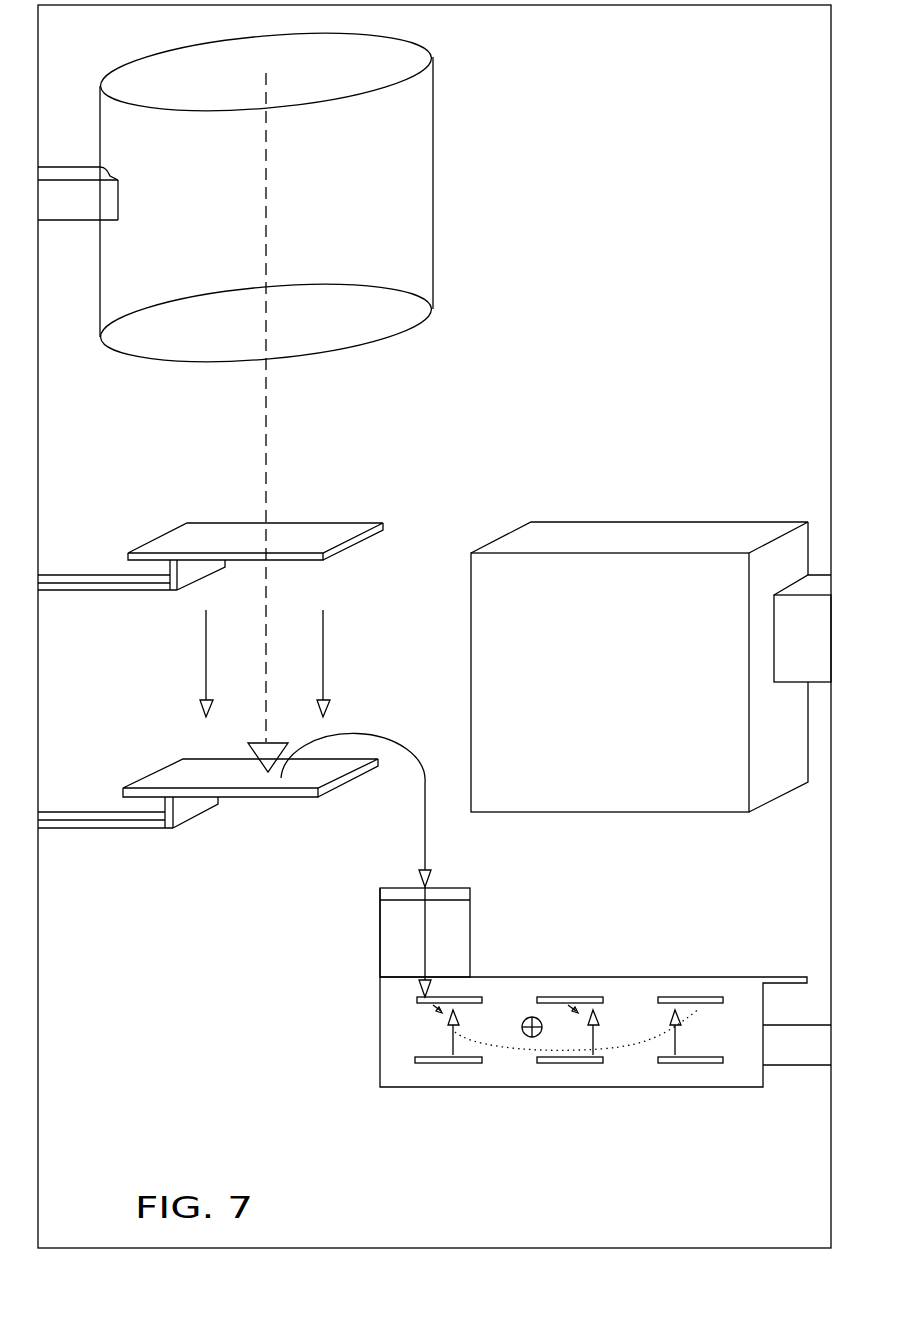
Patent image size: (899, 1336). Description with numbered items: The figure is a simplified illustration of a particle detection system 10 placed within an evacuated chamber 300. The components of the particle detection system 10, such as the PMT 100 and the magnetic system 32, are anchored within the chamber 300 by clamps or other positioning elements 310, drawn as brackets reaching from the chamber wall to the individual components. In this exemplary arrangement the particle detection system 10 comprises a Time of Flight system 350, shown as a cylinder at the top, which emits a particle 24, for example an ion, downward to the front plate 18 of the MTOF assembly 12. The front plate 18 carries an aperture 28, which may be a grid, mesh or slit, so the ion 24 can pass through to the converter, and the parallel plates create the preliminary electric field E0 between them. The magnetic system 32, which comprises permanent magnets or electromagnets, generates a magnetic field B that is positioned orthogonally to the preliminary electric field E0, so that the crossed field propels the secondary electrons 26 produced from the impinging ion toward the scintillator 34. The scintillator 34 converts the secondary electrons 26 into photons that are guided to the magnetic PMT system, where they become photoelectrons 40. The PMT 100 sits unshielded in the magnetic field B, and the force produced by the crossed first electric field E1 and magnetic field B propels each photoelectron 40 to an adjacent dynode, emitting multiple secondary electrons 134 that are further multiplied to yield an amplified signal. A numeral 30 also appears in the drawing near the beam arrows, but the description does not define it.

The chamber 300 is at (830, 6).
The Time of Flight (TOF) system 350 is at (393, 194).
The positioning elements 310 is at (60, 200).
The MTOF assembly 12 is at (225, 478).
The front plate 18 is at (227, 540).
The ions 24 is at (267, 460).
The electron beam 30 is at (323, 627).
The preliminary electric field E0 is at (345, 680).
The secondary electrons 26 is at (422, 786).
The scintillator 34 is at (380, 887).
The aperture 28 is at (510, 1029).
The PMT 100 is at (510, 1029).
The secondary electrons 134 is at (640, 1050).
The photoelectrons 40 is at (500, 1048).
The first electric field E1 is at (445, 1022).
The magnetic field B is at (522, 1030).
The particle detection system 10 is at (639, 600).
The magnetic system 32 is at (588, 540).